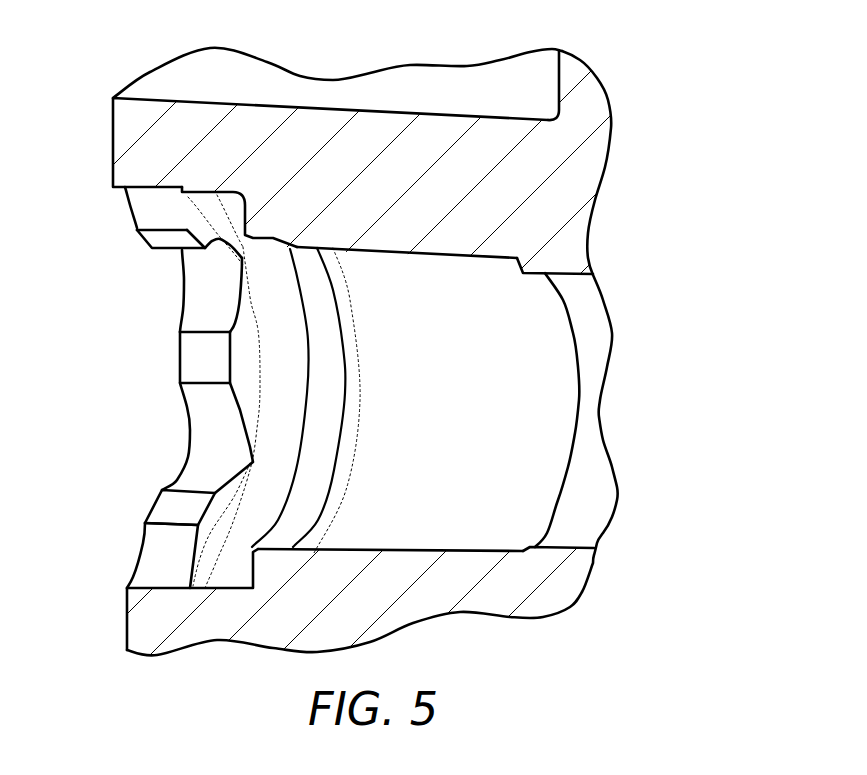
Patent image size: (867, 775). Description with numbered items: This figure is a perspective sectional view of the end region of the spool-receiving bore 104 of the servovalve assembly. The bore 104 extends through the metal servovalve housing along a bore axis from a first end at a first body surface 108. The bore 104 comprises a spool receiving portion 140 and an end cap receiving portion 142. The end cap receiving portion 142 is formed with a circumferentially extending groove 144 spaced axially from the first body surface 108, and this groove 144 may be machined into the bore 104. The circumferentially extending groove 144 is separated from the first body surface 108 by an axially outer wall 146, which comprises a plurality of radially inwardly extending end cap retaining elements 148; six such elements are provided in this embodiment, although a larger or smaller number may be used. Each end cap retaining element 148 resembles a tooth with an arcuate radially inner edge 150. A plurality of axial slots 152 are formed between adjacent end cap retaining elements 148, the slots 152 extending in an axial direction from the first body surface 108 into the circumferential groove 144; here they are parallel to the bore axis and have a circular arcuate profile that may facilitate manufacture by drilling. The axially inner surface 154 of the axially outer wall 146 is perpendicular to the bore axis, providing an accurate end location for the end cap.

The spool-receiving bore 104 is at (628, 407).
The first body surface 108 is at (113, 146).
The spool receiving portion 140 is at (558, 546).
The end cap receiving portion 142 is at (417, 550).
The circumferentially extending groove 144 is at (208, 192).
The axially outer wall 146 is at (128, 203).
The end cap retaining element 148 is at (143, 218).
The arcuate radially inner edge 150 is at (168, 250).
The axial slot 152 is at (203, 445).
The axially inner surface 154 is at (203, 528).